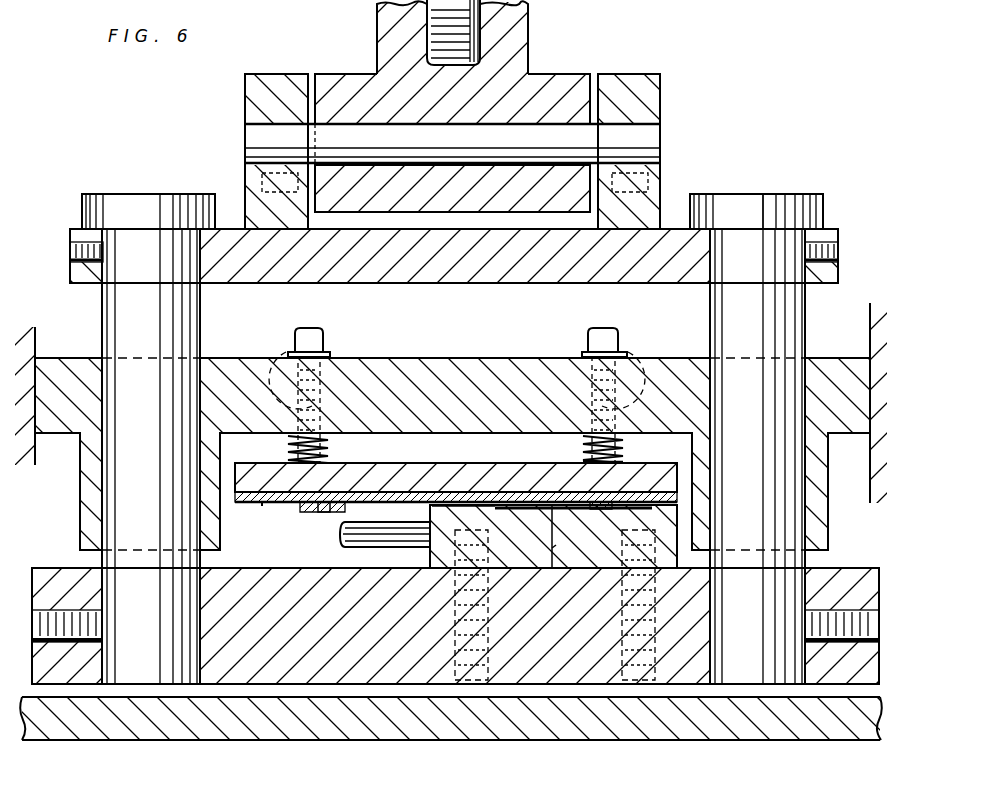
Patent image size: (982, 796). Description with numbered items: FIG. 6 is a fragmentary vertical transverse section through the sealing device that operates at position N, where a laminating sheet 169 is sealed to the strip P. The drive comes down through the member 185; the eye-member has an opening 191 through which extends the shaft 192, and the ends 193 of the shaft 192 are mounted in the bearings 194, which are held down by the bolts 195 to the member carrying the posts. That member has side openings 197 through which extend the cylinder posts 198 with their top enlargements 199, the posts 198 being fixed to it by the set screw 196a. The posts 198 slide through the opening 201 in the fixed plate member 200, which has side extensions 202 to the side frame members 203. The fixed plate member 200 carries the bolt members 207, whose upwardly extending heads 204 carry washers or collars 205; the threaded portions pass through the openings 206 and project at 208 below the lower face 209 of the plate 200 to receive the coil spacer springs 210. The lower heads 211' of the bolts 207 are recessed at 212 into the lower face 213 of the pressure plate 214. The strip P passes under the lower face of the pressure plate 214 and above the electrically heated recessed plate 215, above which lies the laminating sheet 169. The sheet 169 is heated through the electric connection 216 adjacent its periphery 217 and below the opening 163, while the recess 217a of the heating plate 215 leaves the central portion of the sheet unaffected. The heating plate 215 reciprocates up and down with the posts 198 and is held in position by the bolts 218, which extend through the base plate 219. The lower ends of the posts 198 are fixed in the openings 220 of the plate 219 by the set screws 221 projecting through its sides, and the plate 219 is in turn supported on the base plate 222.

The drive member 185 is at (515, 30).
The opening of eye-member 191 is at (350, 120).
The shaft 192 is at (445, 170).
The shaft ends 193 is at (660, 131).
The bearings 194 is at (642, 80).
The bolts 195 is at (665, 181).
The sealing position N is at (694, 154).
The set screw 196a is at (72, 250).
The side openings 197 is at (203, 270).
The cylinder posts 198 is at (105, 316).
The top enlargements 199 is at (150, 195).
The fixed plate member 200 is at (452, 360).
The opening 201 is at (203, 387).
The side extensions 202 is at (48, 380).
The side frame members 203 is at (40, 435).
The heads 204 is at (308, 328).
The washers or collars 205 is at (328, 352).
The openings 206 is at (352, 358).
The bolt members 207 is at (288, 347).
The projecting portion of bolts 208 is at (623, 450).
The lower face of plate 209 is at (448, 470).
The coil spacer springs 210 is at (328, 448).
The heads of bolts 211' is at (440, 535).
The recess 212 is at (322, 513).
The lower face of pressure plate 213 is at (265, 462).
The pressure plate 214 is at (420, 471).
The opening 163 is at (540, 490).
The strip P is at (262, 506).
The laminating sheet 169 is at (505, 508).
The electrically heated recessed plate 215 is at (430, 548).
The electric connection 216 is at (360, 557).
The periphery 217 is at (432, 508).
The recess 217a is at (552, 548).
The bolts 218 is at (468, 686).
The base plate 219 is at (680, 678).
The openings 220 is at (205, 665).
The set screws 221 is at (33, 622).
The base plate 222 is at (249, 730).